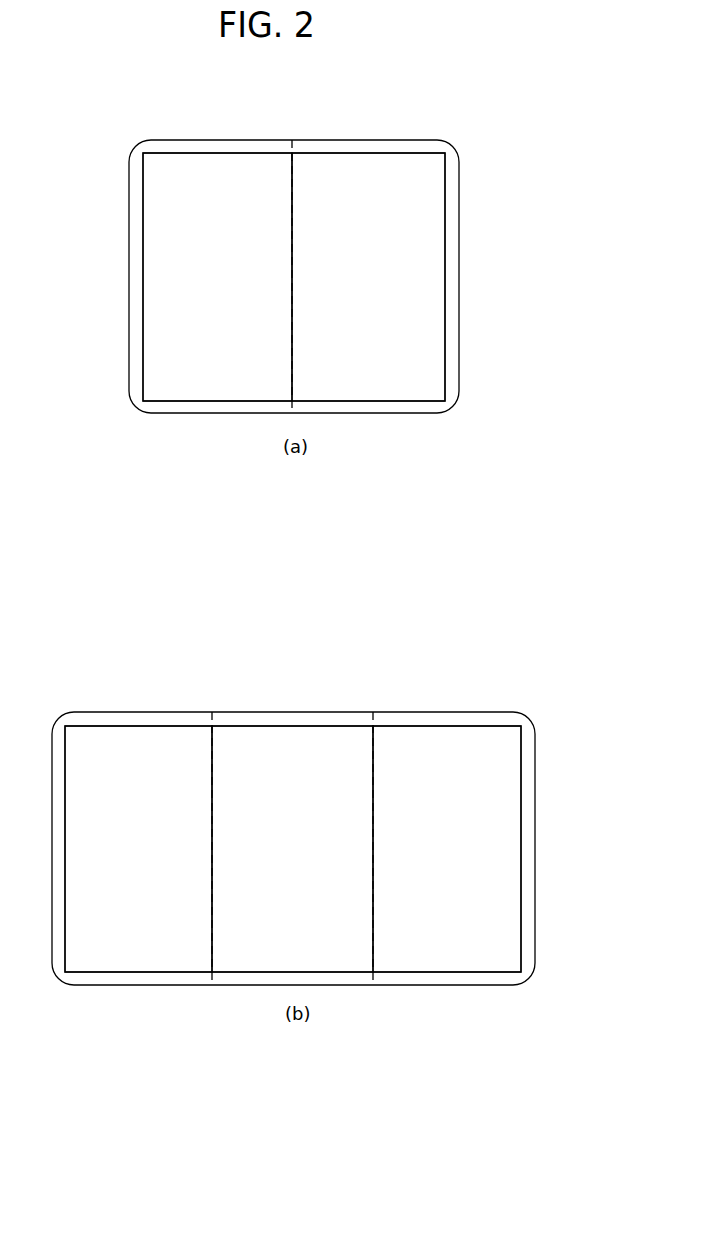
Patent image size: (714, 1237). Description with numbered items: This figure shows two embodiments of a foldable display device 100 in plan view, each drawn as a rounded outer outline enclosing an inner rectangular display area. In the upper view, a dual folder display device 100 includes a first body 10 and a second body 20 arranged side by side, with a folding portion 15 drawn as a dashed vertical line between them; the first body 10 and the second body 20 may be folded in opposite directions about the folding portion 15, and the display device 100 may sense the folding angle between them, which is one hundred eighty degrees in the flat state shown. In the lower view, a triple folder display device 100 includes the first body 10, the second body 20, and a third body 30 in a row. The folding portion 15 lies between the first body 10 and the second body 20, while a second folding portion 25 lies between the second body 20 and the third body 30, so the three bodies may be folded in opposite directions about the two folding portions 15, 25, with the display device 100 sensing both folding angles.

The display device 100 is at (441, 140).
The first body 10 is at (207, 148).
The second body 20 is at (393, 148).
The third body 30 is at (414, 720).
The folding portion 15 is at (292, 373).
The second folding portion 25 is at (373, 943).